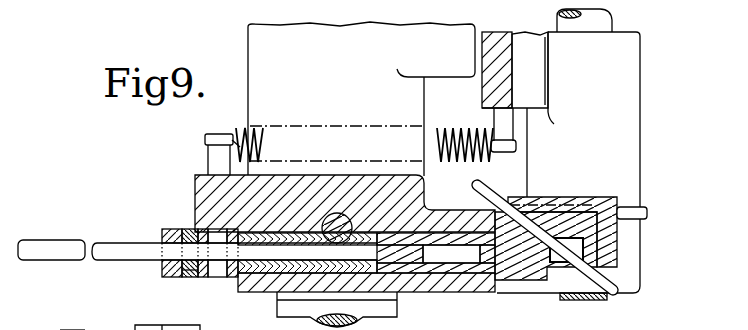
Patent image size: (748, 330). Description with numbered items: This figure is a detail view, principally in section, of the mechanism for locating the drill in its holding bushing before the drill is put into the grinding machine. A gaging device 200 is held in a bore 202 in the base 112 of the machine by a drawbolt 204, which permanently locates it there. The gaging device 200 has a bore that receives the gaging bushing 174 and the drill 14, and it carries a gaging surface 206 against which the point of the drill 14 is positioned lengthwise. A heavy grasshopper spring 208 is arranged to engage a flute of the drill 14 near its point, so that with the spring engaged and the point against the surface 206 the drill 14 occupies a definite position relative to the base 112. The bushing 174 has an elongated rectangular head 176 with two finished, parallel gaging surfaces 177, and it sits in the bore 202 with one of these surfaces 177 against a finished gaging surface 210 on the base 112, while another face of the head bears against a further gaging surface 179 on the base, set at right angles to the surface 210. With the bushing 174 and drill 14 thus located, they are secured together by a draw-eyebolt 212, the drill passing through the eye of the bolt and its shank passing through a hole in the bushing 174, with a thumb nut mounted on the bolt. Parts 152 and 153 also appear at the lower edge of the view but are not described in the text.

The base 112 is at (196, 178).
The drill 14 is at (467, 262).
The gaging surfaces 177 is at (172, 229).
The gaging surface 210 is at (190, 229).
The head 176 is at (162, 268).
The draw-eyebolt 212 is at (188, 277).
The drawbolt 204 is at (337, 213).
The gaging bushing 174 is at (374, 244).
The bore 202 is at (247, 278).
The gaging surface 179 is at (243, 283).
The gaging device 200 is at (533, 274).
The gaging surface 206 is at (592, 238).
The grasshopper spring 208 is at (545, 237).
The base member 153 is at (167, 321).
The base member 152 is at (72, 324).